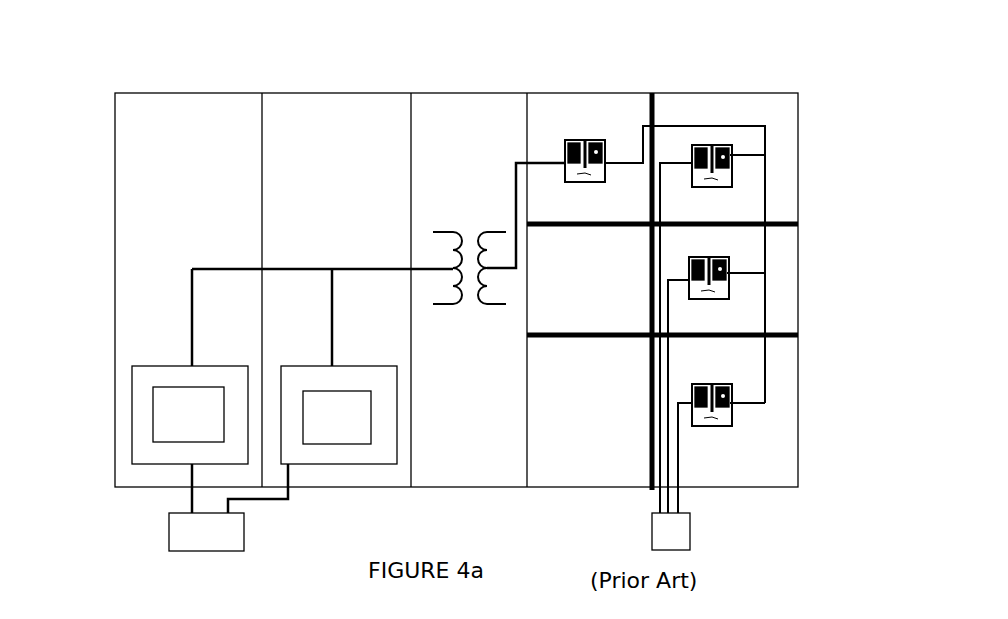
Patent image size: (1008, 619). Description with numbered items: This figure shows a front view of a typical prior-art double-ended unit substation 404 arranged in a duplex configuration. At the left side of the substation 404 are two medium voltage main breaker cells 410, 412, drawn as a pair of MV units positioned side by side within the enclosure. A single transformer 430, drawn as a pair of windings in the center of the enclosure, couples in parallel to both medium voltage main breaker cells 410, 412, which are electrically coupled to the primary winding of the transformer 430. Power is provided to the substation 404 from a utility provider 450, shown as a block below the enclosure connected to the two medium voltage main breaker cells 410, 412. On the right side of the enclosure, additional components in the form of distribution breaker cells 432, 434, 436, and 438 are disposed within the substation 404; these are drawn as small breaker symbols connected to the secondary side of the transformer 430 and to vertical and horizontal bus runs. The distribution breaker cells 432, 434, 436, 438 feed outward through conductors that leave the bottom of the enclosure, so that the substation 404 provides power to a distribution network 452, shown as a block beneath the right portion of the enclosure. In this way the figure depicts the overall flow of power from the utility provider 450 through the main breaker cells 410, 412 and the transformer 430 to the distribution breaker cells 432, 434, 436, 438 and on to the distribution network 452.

The substation 404 is at (204, 599).
The medium voltage main breaker cell 410 is at (140, 412).
The medium voltage main breaker cell 412 is at (371, 464).
The transformer 430 is at (472, 232).
The distribution breaker cell 432 is at (583, 140).
The distribution breaker cell 434 is at (705, 145).
The distribution breaker cell 436 is at (729, 286).
The distribution breaker cell 438 is at (732, 418).
The utility provider 450 is at (169, 537).
The distribution network 452 is at (652, 537).